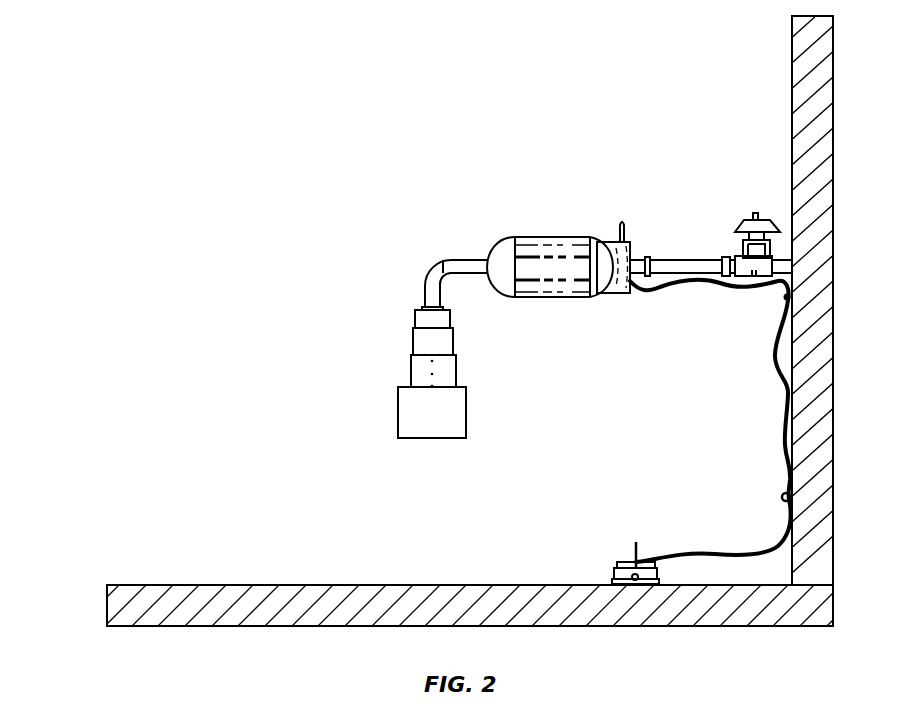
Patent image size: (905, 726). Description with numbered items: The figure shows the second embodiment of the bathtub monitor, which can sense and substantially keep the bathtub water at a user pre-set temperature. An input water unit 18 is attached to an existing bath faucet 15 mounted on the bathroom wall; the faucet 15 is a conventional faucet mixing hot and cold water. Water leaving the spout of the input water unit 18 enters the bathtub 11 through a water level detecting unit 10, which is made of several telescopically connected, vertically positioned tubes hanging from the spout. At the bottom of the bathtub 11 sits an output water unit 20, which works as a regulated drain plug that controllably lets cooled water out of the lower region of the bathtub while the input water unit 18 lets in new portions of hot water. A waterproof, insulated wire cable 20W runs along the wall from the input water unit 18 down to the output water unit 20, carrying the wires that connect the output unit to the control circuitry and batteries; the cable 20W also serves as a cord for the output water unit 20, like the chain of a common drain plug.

The water level detecting unit 10 is at (398, 362).
The bathtub 11 is at (142, 585).
The bath faucet 15 is at (730, 212).
The input water unit 18 is at (510, 223).
The output water unit 20 is at (602, 552).
The wire cable 20W is at (782, 460).